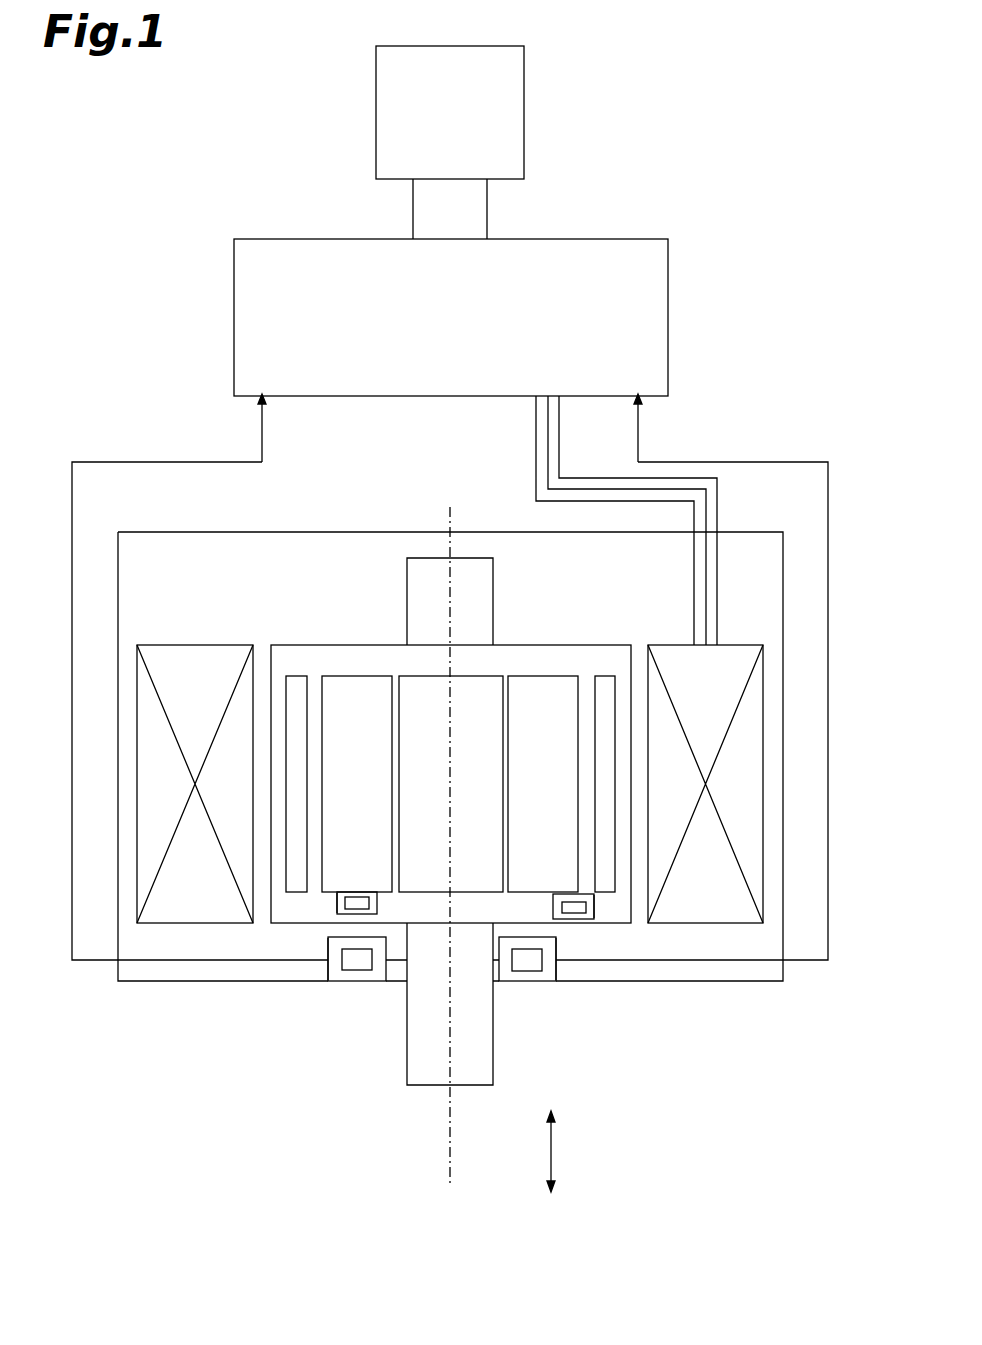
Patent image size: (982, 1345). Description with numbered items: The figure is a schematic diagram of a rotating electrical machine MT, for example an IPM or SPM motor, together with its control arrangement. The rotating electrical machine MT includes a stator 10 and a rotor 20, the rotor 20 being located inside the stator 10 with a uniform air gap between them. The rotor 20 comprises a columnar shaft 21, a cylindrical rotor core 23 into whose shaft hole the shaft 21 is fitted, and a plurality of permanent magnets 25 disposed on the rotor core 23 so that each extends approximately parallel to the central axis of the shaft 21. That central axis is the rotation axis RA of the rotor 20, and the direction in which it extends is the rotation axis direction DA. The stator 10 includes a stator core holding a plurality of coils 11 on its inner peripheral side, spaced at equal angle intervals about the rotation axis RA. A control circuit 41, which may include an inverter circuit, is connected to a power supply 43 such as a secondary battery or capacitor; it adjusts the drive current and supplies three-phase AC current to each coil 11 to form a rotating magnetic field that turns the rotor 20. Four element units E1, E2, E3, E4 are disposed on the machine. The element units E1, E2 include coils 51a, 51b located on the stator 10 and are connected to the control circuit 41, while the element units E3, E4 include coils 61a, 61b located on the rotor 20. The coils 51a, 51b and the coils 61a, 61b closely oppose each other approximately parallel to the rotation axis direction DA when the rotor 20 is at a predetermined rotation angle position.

The rotating electrical machine MT is at (146, 1014).
The power supply 43 is at (524, 122).
The control circuit 41 is at (668, 330).
The stator 10 is at (700, 981).
The coil 11 is at (195, 645).
The rotor 20 is at (553, 645).
The shaft 21 is at (407, 1047).
The rotor core 23 is at (365, 645).
The permanent magnet 25 is at (353, 676).
The coil 61a is at (570, 894).
The coil 61b is at (361, 892).
The coil 51a is at (360, 981).
The coil 51b is at (527, 972).
The element unit E1 is at (328, 972).
The element unit E2 is at (556, 972).
The element unit E3 is at (594, 905).
The element unit E4 is at (337, 903).
The rotation axis RA is at (449, 1155).
The rotation axis direction DA is at (551, 1147).